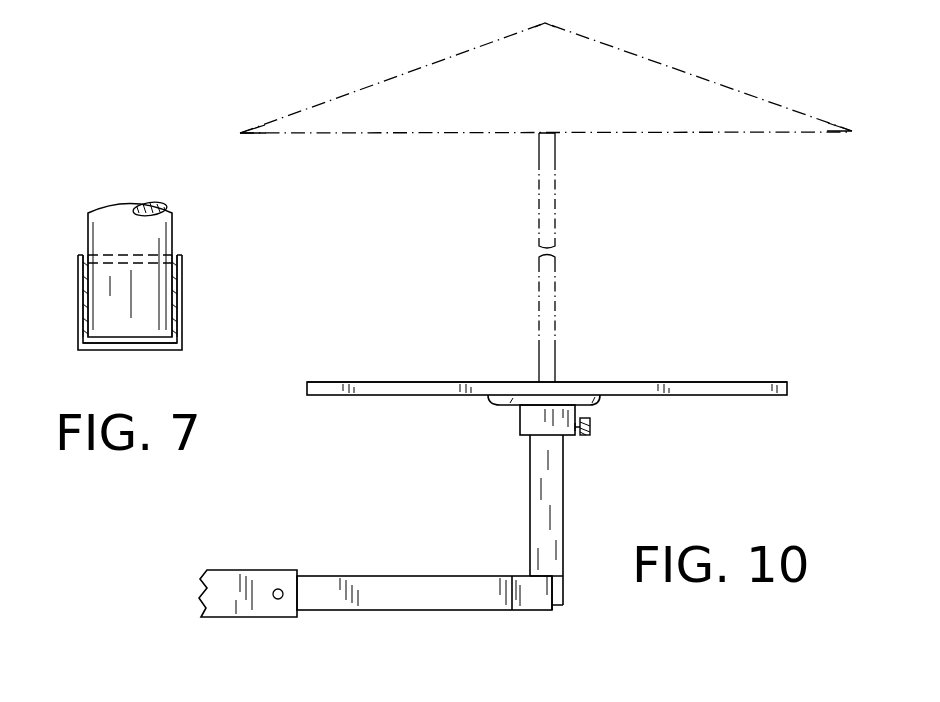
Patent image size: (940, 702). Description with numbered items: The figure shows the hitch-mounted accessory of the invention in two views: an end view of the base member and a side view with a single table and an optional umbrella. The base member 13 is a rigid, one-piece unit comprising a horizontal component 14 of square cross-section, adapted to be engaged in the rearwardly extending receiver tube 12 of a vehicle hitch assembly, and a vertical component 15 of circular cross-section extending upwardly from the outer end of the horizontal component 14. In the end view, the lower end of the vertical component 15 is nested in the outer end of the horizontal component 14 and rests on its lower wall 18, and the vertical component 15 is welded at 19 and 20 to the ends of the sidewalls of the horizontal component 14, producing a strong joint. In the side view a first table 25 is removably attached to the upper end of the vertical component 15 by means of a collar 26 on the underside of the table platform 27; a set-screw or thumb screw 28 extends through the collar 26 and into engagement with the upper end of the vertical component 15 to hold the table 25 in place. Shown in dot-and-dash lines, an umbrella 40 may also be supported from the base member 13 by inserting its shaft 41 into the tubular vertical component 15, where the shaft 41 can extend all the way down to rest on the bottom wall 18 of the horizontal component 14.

In FIG. 10, the receiver tube 12 is at (237, 570).
In FIG. 10, the base member 13 is at (389, 567).
In FIG. 7, the horizontal component 14 is at (183, 334).
In FIG. 10, the horizontal component 14 is at (416, 612).
In FIG. 7, the vertical component 15 is at (174, 232).
In FIG. 10, the vertical component 15 is at (565, 520).
In FIG. 7, the lower wall 18 is at (152, 351).
In FIG. 7, the weld 19 is at (182, 270).
In FIG. 7, the weld 20 is at (83, 296).
In FIG. 10, the first table 25 is at (708, 380).
In FIG. 10, the collar 26 is at (503, 425).
In FIG. 10, the table platform 27 is at (435, 382).
In FIG. 10, the set-screw 28 is at (592, 437).
In FIG. 10, the umbrella 40 is at (413, 140).
In FIG. 10, the shaft 41 is at (557, 235).